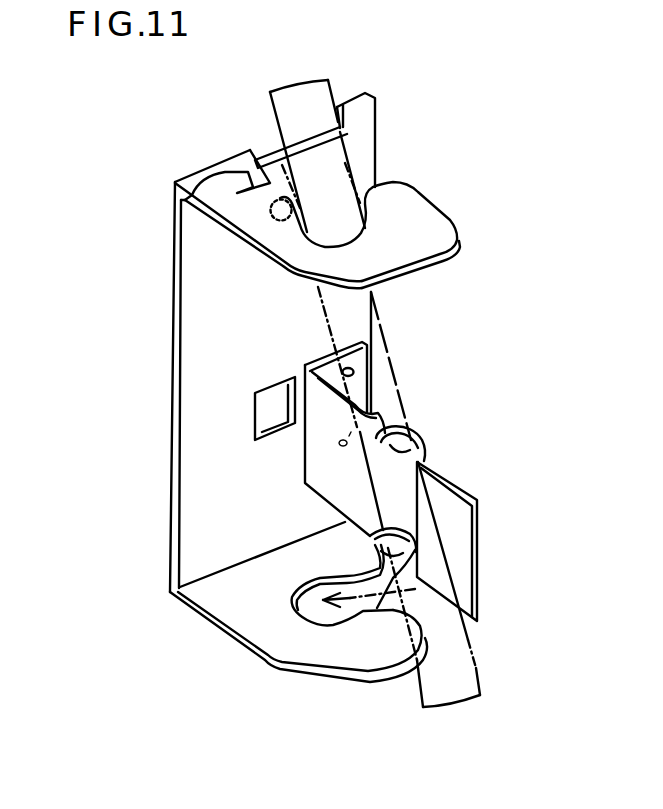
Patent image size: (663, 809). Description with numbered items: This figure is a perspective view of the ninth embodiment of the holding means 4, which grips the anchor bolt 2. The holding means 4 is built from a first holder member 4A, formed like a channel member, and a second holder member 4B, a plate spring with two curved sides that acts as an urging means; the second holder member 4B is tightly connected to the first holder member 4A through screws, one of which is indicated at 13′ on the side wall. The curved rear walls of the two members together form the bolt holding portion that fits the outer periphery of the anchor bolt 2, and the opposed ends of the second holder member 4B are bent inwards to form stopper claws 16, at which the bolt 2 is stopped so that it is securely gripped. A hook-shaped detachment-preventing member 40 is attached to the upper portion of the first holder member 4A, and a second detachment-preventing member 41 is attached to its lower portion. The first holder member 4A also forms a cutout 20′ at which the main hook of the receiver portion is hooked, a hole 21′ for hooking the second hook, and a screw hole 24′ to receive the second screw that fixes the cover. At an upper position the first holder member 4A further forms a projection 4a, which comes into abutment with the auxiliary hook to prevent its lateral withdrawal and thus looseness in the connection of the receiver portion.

The anchor bolt 2 is at (295, 113).
The projection 4a is at (364, 95).
The holding means 4 is at (98, 440).
The first holder member 4A is at (183, 450).
The second holder member 4B is at (274, 422).
The hook-shaped detachment-preventing member 40 is at (284, 217).
The second detachment-preventing member 41 is at (295, 630).
The cutout 20′ is at (198, 203).
The screw hole 24′ is at (268, 220).
The hole 21′ is at (272, 398).
The hole 13′ is at (353, 370).
The stopper claws 16 is at (423, 441).